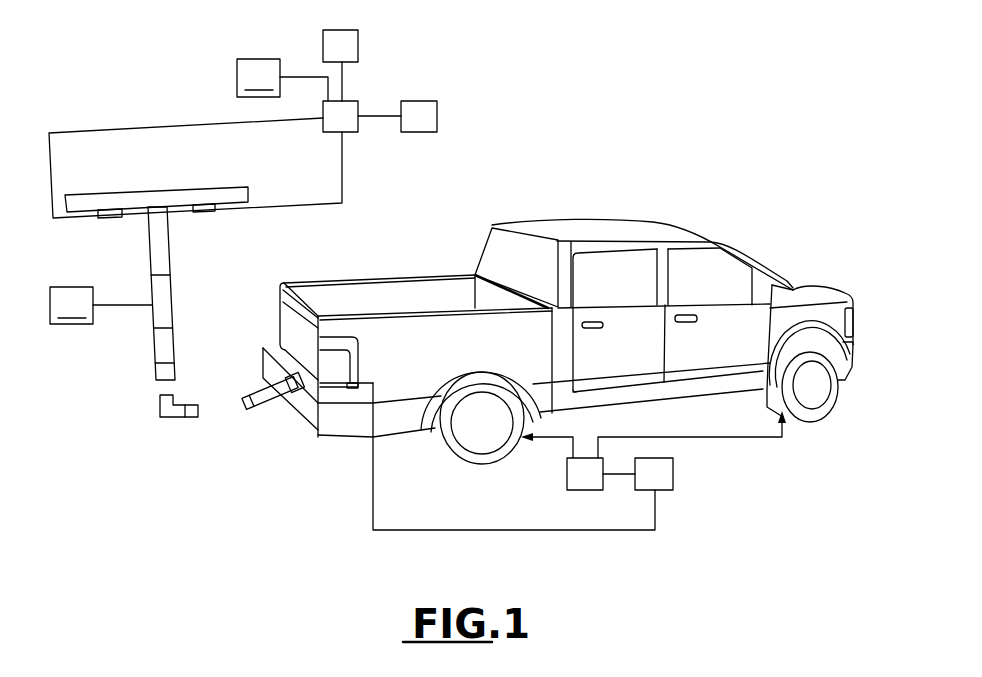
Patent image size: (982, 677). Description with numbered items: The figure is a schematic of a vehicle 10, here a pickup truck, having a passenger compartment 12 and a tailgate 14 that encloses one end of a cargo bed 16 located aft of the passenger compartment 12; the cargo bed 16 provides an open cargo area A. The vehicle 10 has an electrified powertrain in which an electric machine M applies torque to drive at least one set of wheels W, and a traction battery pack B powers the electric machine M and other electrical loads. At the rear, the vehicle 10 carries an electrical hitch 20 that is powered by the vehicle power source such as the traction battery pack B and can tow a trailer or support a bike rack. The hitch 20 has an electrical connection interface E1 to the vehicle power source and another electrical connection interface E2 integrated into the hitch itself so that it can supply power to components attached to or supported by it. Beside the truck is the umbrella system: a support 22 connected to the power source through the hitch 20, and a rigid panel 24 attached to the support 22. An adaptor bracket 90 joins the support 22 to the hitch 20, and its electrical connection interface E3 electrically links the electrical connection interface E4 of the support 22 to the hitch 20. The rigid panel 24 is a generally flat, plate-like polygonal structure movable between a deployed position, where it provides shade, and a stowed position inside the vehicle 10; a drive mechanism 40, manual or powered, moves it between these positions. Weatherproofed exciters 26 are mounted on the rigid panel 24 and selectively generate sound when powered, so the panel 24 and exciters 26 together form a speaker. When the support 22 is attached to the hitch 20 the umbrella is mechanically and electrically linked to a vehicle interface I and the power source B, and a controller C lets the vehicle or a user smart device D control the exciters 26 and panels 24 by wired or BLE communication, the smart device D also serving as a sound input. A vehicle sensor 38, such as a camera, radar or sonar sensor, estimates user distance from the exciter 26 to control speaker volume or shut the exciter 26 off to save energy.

The vehicle 10 is at (771, 225).
The passenger compartment 12 is at (558, 366).
The tailgate 14 is at (293, 335).
The cargo bed 16 is at (463, 293).
The electrical hitch 20 is at (279, 412).
The support 22 is at (186, 320).
The rigid panel 24 is at (155, 197).
The exciter 26 is at (110, 218).
The vehicle sensor 38 is at (258, 78).
The drive mechanism 40 is at (101, 305).
The adaptor bracket 90 is at (160, 417).
The cargo area A is at (397, 296).
The electrical connection interface E1 is at (298, 370).
The electrical connection interface E2 is at (255, 413).
The electrical connection interface E3 is at (198, 400).
The electrical connection interface E4 is at (156, 371).
The wheels W is at (477, 438).
The vehicle interface I is at (340, 46).
The controller C is at (340, 116).
The smart device D is at (419, 116).
The electric machine M is at (585, 474).
The traction battery pack B is at (654, 474).